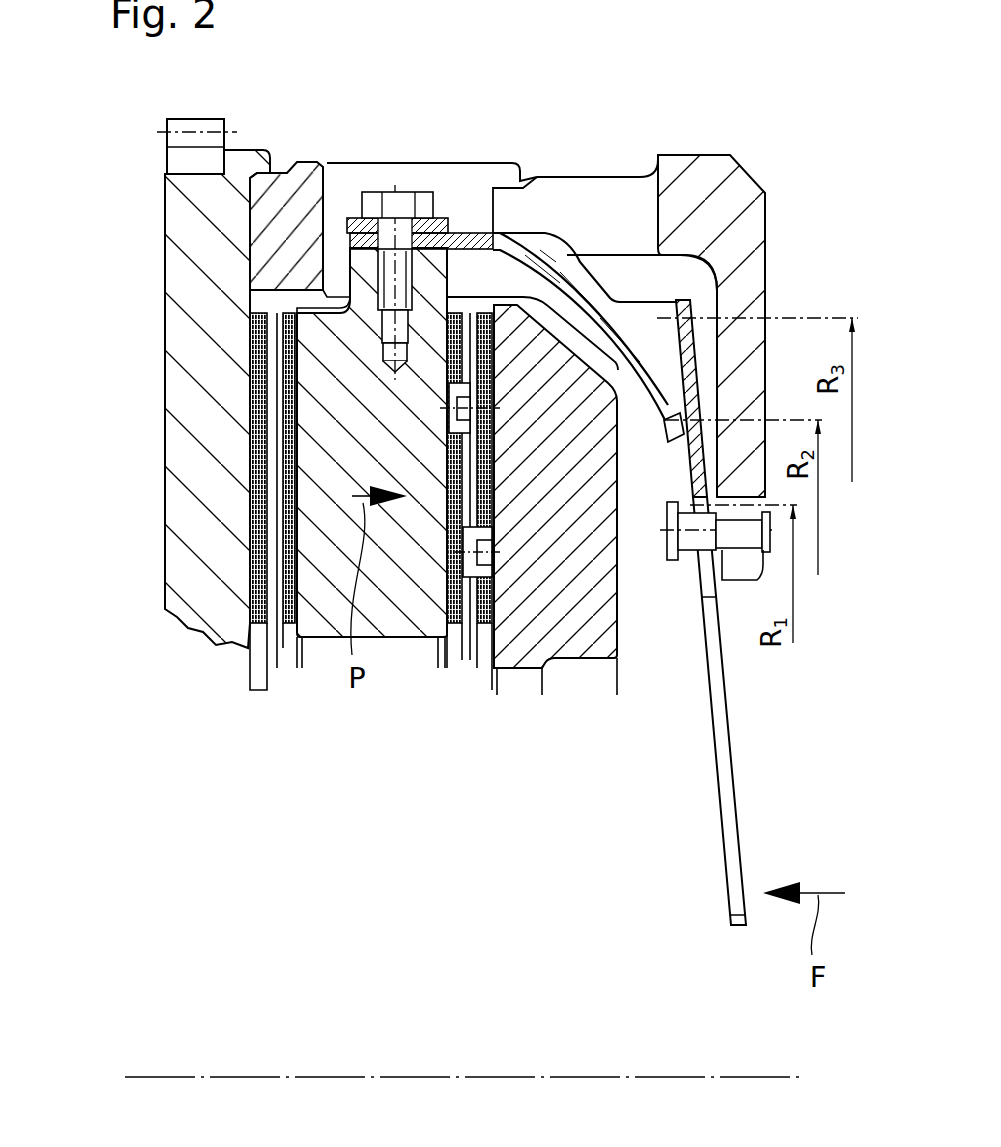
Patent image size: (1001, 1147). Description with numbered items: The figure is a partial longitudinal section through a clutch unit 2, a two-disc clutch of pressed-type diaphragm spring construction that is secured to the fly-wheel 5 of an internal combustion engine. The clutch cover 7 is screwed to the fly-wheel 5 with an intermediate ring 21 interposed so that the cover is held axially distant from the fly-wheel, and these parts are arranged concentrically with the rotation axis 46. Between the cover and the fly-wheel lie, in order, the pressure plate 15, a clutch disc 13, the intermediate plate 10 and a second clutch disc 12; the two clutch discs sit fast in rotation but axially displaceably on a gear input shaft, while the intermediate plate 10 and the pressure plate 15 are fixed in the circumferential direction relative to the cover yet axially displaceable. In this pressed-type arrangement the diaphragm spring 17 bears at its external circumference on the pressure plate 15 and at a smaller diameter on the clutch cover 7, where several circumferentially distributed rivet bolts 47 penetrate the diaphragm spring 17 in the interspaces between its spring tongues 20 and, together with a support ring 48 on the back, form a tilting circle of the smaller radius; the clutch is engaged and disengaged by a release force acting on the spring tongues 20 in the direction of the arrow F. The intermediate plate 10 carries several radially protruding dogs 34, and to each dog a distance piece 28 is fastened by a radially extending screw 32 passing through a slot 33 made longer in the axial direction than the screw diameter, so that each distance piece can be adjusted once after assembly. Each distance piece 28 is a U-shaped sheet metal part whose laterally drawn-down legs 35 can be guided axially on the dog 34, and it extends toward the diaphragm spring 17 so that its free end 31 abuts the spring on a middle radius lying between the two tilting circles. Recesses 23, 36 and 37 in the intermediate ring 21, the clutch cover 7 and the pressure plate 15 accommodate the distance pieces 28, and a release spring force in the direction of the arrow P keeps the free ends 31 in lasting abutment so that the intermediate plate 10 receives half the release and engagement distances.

The clutch unit 2 is at (739, 132).
The fly-wheel 5 is at (212, 294).
The clutch cover 7 is at (728, 210).
The intermediate plate 10 is at (335, 400).
The clutch disc 12 is at (268, 672).
The clutch disc 13 is at (465, 670).
The pressure plate 15 is at (562, 615).
The diaphragm spring 17 is at (688, 341).
The spring tongues 20 is at (718, 707).
The intermediate ring 21 is at (337, 162).
The recess 23 is at (472, 188).
The distance piece 28 is at (552, 210).
The free end 31 is at (680, 413).
The screw 32 is at (380, 188).
The slot 33 is at (427, 210).
The dog 34 is at (362, 266).
The leg 35 is at (527, 185).
The recess 36 is at (655, 300).
The recess 37 is at (620, 205).
The rotation axis 46 is at (677, 1077).
The rivet bolt 47 is at (740, 566).
The support ring 48 is at (668, 550).